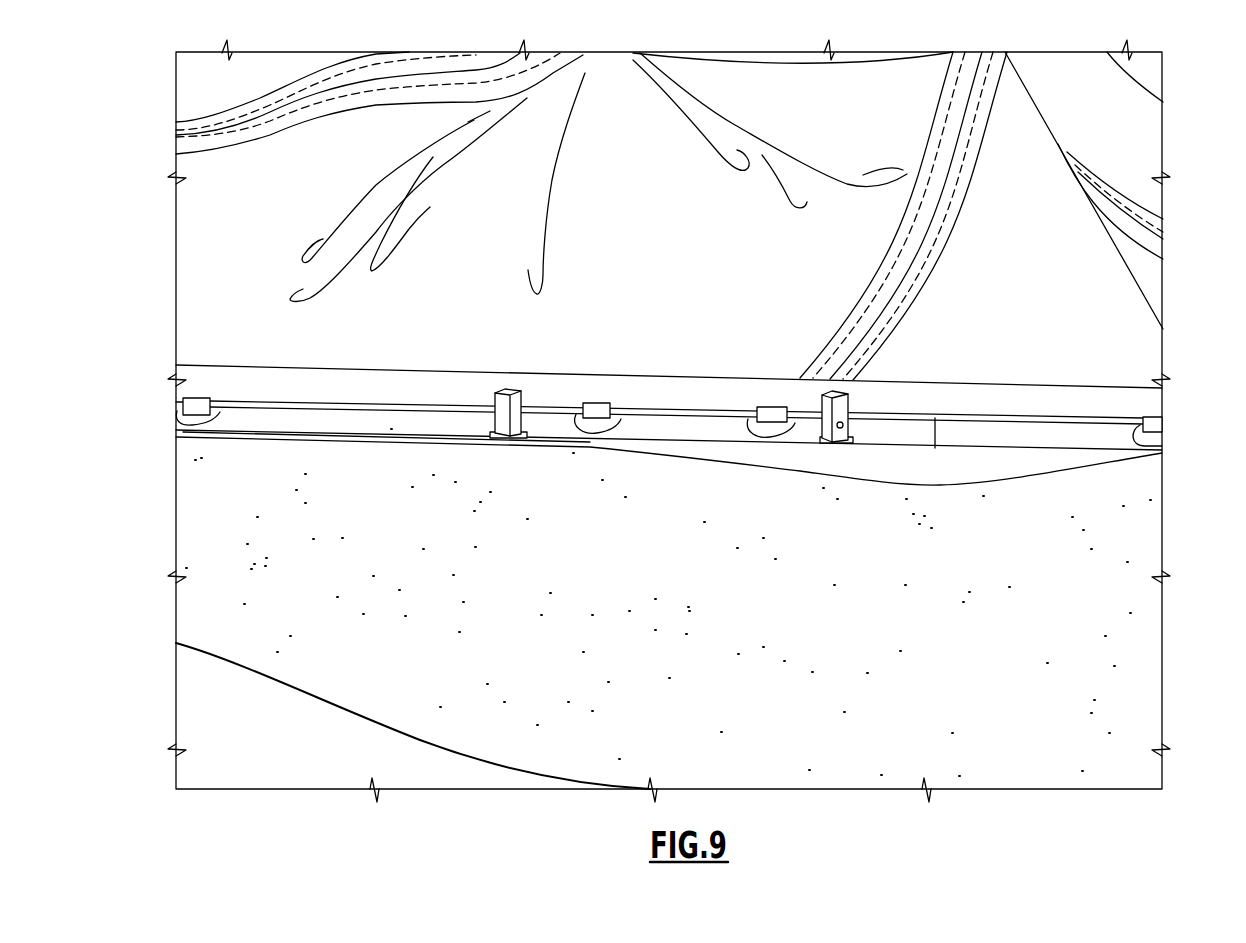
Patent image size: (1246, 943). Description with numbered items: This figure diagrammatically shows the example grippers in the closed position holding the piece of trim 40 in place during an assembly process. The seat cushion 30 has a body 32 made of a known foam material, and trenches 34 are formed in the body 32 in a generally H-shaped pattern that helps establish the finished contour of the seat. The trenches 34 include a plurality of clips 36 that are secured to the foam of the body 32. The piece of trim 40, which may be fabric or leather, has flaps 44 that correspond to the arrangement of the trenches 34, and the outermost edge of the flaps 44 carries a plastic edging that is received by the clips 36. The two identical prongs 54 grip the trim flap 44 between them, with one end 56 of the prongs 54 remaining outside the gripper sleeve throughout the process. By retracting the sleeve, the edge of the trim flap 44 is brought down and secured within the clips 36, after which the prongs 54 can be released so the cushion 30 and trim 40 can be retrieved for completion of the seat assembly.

The seat cushion 30 is at (1132, 506).
The body 32 is at (769, 649).
The trenches 34 is at (376, 423).
The clips 36 is at (199, 412).
The piece of trim 40 is at (1124, 299).
The flaps 44 is at (423, 388).
The prongs 54 is at (523, 422).
The end 56 is at (823, 400).